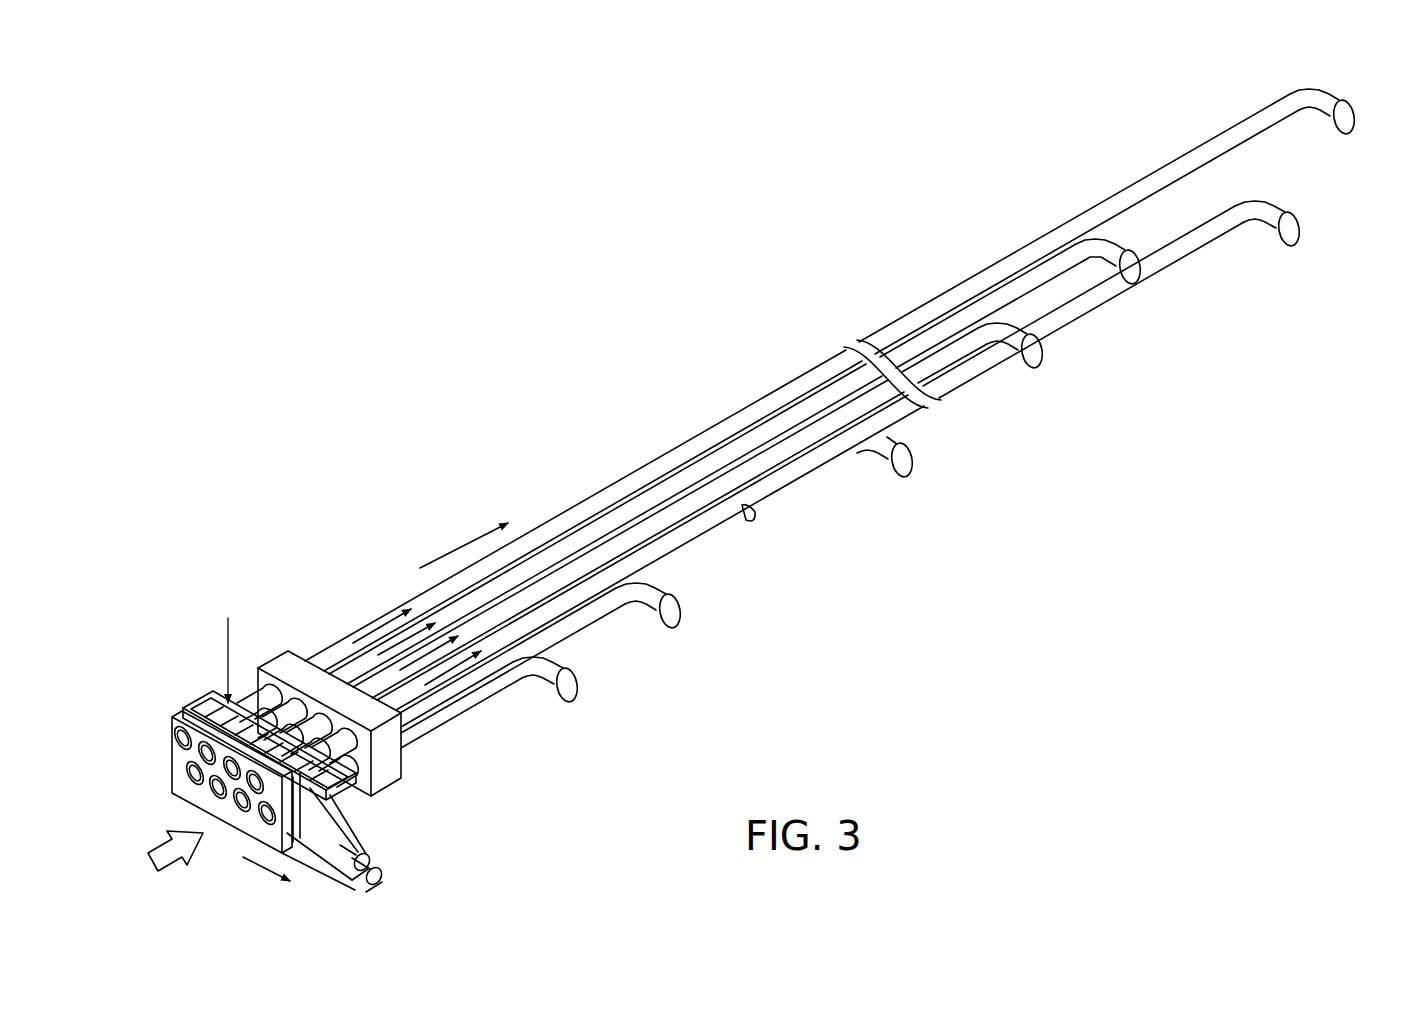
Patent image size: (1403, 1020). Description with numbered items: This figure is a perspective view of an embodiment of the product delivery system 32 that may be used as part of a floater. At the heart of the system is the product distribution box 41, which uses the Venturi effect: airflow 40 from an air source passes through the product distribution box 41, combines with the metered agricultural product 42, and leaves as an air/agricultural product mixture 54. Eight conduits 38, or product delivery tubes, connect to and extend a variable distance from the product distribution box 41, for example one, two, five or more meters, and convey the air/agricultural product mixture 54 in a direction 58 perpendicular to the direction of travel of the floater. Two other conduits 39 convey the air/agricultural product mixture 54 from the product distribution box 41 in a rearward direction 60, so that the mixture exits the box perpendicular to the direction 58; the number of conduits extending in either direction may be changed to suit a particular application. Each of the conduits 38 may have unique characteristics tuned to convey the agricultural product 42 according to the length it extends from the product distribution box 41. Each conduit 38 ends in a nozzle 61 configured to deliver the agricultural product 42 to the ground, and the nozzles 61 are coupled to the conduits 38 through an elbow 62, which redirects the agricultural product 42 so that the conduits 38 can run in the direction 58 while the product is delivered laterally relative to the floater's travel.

The product delivery system 32 is at (394, 350).
The conduit 38 is at (618, 458).
The other conduit 39 is at (370, 862).
The airflow 40 is at (158, 844).
The product distribution box 41 is at (206, 683).
The agricultural product 42 is at (230, 652).
The air/agricultural product mixture 54 is at (432, 680).
The direction 58 is at (468, 547).
The rearward direction 60 is at (256, 877).
The nozzle 61 is at (1356, 126).
The elbow 62 is at (1312, 90).